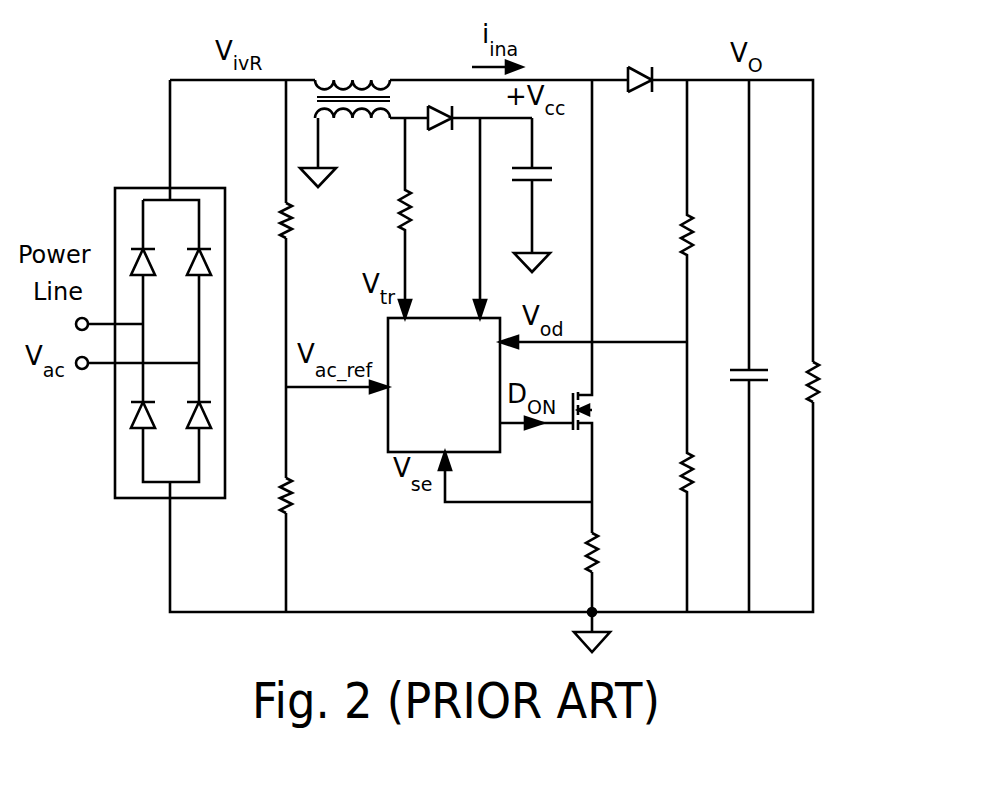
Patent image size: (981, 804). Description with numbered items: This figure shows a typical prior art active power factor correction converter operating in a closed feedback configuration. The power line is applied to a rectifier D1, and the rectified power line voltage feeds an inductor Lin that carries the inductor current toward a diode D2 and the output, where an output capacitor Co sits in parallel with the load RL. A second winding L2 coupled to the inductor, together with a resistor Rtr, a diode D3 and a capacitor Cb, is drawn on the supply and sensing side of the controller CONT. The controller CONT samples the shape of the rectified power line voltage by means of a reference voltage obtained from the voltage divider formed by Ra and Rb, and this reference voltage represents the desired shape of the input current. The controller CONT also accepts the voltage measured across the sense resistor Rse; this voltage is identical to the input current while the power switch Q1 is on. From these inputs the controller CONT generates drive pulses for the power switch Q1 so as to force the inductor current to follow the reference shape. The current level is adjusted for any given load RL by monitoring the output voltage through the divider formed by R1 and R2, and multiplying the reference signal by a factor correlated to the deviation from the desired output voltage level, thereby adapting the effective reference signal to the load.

The bridge rectifier diodes D1 is at (175, 364).
The input inductor (primary winding) Lin is at (352, 67).
The auxiliary winding L2 is at (345, 148).
The voltage divider resistor Ra is at (305, 227).
The voltage divider resistor Rb is at (305, 507).
The resistor Rtr is at (384, 218).
The boost diode D2 is at (636, 56).
The auxiliary supply diode D3 is at (447, 141).
The bias capacitor Cb is at (543, 195).
The controller CONT is at (444, 385).
The power switch Q1 is at (604, 411).
The current sense resistor Rse is at (616, 556).
The output voltage divider resistor R1 is at (705, 211).
The output voltage divider resistor R2 is at (706, 477).
The output capacitor Co is at (760, 346).
The load RL is at (837, 386).